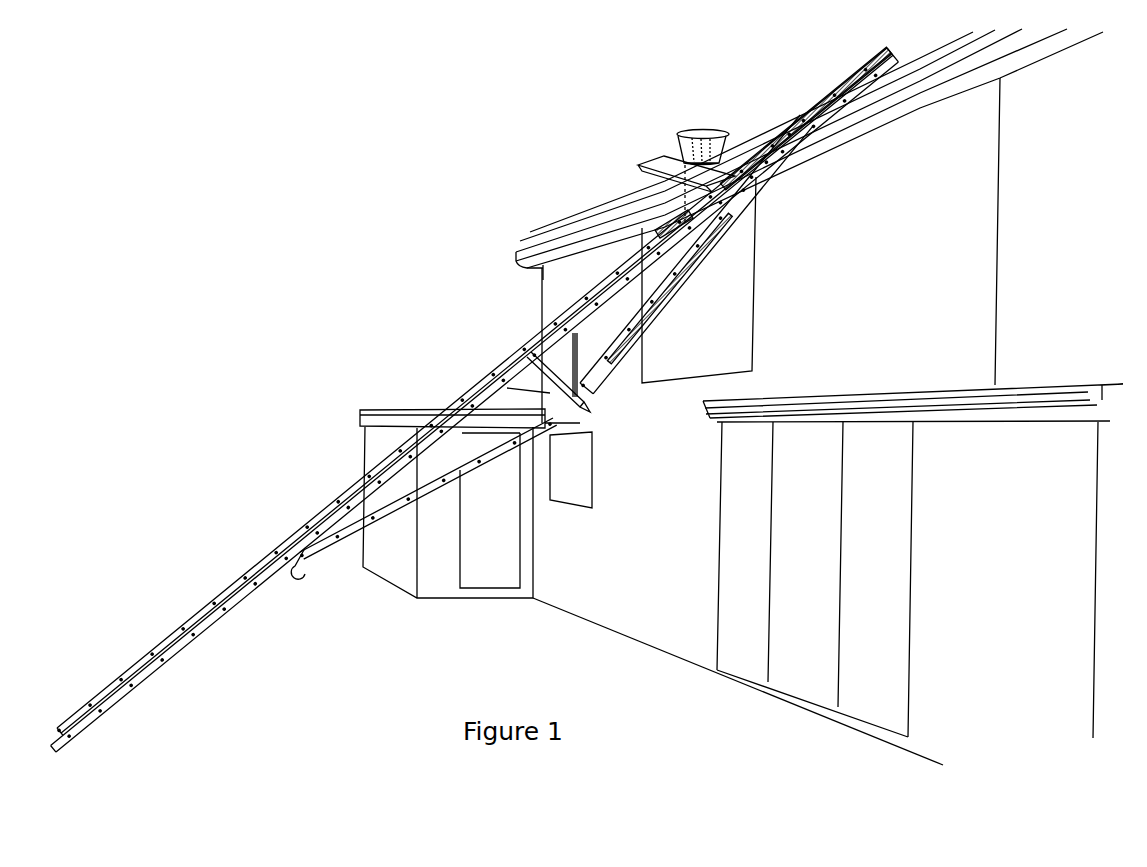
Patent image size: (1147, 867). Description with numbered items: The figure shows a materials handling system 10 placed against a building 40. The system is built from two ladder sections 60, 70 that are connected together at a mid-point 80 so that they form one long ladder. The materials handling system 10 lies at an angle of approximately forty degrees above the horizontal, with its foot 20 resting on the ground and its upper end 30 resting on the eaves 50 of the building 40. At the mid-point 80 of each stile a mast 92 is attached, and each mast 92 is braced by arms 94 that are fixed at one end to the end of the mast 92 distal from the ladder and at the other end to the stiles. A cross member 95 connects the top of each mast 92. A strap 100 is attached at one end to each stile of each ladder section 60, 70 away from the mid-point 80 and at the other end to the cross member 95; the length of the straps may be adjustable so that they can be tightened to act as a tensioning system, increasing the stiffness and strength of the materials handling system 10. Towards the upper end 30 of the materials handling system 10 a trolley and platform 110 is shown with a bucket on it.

The materials handling system 10 is at (304, 212).
The foot 20 is at (102, 749).
The upper end 30 is at (838, 67).
The house 40 is at (837, 226).
The eaves 50 is at (858, 112).
The ladder section 60 is at (237, 597).
The ladder section 70 is at (565, 312).
The mid-point 80 is at (515, 333).
The mast 92 is at (573, 383).
The arms 94 is at (578, 353).
The cross member 95 is at (567, 415).
The strap 100 is at (671, 286).
The trolley and platform 110 is at (642, 136).